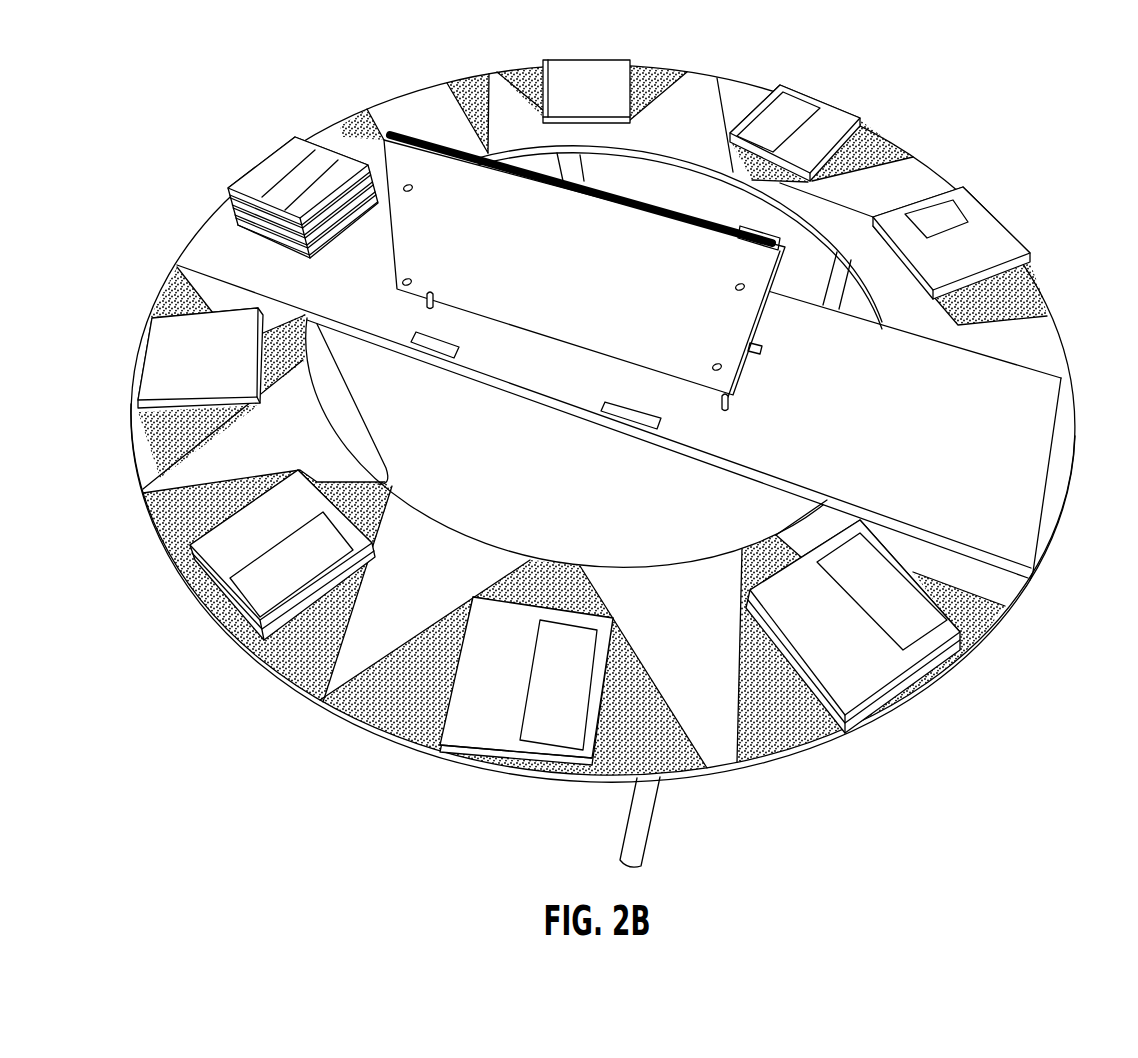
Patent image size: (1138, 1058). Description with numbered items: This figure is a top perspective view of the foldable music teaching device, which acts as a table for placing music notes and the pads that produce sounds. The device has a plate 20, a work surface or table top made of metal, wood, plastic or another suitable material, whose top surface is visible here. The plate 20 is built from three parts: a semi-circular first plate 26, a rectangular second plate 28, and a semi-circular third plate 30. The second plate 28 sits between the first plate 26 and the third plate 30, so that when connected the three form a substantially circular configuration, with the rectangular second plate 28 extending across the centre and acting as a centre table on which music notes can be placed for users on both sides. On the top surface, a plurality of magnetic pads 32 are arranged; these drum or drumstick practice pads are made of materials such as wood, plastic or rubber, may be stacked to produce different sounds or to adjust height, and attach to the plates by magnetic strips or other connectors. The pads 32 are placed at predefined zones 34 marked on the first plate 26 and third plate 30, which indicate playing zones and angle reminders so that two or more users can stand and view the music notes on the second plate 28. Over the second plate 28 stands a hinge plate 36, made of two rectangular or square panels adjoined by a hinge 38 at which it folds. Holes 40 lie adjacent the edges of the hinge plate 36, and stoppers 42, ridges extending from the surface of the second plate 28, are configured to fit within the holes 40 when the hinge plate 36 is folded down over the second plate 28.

The plate 20 is at (152, 535).
The first plate 26 is at (393, 710).
The second plate 28 is at (1020, 428).
The third plate 30 is at (1033, 344).
The magnetic pads 32 is at (228, 204).
The zones 34 is at (787, 737).
The hinge plate 36 is at (608, 268).
The hinge 38 is at (408, 184).
The holes 40 is at (402, 138).
The stoppers 42 is at (425, 299).